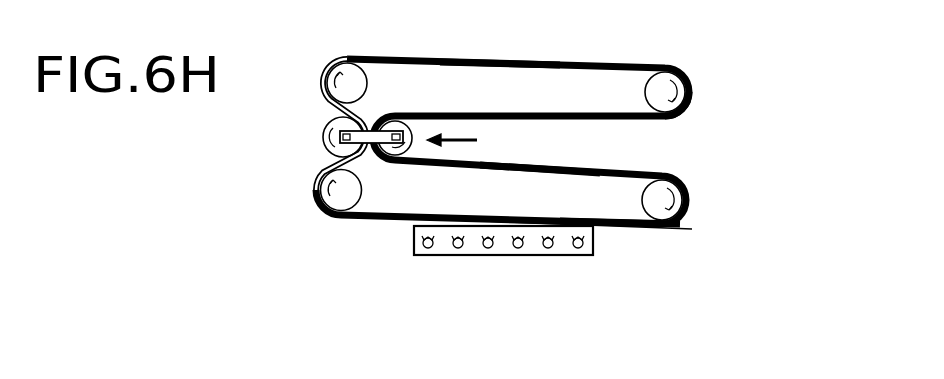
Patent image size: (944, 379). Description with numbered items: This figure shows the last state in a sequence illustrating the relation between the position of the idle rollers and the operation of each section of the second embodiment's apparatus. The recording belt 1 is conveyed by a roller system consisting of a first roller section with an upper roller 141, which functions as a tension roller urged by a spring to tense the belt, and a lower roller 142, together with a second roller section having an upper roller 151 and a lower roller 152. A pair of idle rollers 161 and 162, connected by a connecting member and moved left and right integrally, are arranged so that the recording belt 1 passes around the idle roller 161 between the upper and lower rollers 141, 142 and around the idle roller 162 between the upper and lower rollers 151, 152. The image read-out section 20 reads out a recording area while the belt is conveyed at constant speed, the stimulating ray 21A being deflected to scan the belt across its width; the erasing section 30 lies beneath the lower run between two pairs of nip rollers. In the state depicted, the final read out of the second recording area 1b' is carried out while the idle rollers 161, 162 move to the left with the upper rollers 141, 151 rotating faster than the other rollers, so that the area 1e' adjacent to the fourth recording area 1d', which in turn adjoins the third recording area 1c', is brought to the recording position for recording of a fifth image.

The recording belt 1 is at (325, 68).
The upper roller 141 is at (358, 63).
The lower roller 142 is at (338, 214).
The upper roller 151 is at (690, 80).
The lower roller 152 is at (686, 186).
The idle roller 161 is at (327, 123).
The idle roller 162 is at (397, 126).
The recording area 1e' is at (500, 34).
The fourth recording area 1d' is at (713, 101).
The third recording area 1c' is at (540, 156).
The second recording area 1b' is at (620, 259).
The image read-out section 20 is at (699, 213).
The stimulating ray 21A is at (680, 236).
The erasing section 30 is at (498, 262).